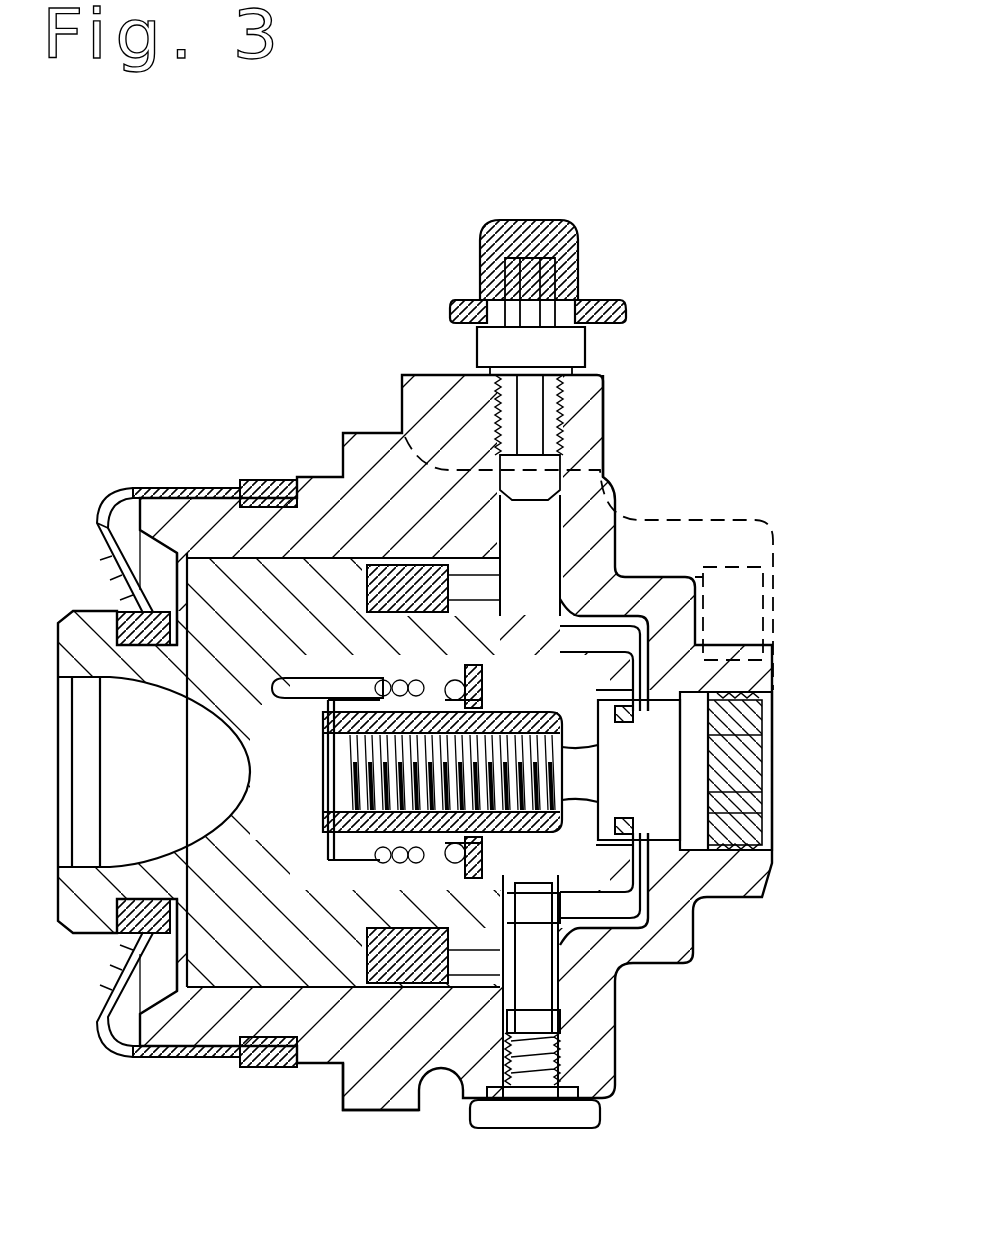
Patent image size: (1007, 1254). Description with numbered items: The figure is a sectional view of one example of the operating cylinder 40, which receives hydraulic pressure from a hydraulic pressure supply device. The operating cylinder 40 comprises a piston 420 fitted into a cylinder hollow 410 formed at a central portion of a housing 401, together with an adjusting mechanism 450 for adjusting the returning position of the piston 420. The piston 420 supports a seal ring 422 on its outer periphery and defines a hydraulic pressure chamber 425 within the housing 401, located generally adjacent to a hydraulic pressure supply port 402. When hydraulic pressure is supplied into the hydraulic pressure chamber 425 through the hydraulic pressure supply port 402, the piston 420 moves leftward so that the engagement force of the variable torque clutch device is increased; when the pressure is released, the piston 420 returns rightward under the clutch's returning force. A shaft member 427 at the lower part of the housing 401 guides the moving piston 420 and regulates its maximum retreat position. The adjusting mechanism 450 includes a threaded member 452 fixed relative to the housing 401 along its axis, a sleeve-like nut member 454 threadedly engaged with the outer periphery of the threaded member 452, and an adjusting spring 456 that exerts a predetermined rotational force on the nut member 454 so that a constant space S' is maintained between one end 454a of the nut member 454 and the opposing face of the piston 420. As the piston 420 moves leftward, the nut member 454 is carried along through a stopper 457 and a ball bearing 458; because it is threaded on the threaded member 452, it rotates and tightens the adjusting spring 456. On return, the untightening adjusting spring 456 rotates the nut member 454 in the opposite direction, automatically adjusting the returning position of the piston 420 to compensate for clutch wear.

The operating cylinder 40 is at (332, 258).
The housing 401 is at (418, 1043).
The hydraulic pressure supply port 402 is at (773, 603).
The cylinder hollow 410 is at (322, 1005).
The piston 420 is at (228, 597).
The seal ring 422 is at (395, 580).
The hydraulic pressure chamber 425 is at (573, 867).
The shaft member 427 is at (538, 997).
The adjusting mechanism 450 is at (533, 705).
The threaded member 452 is at (657, 780).
The nut member 454 is at (326, 738).
The one end of the nut member 454a is at (208, 1058).
The adjusting spring 456 is at (350, 720).
The stopper 457 is at (616, 562).
The ball bearing 458 is at (452, 665).
The constant space S' is at (239, 814).